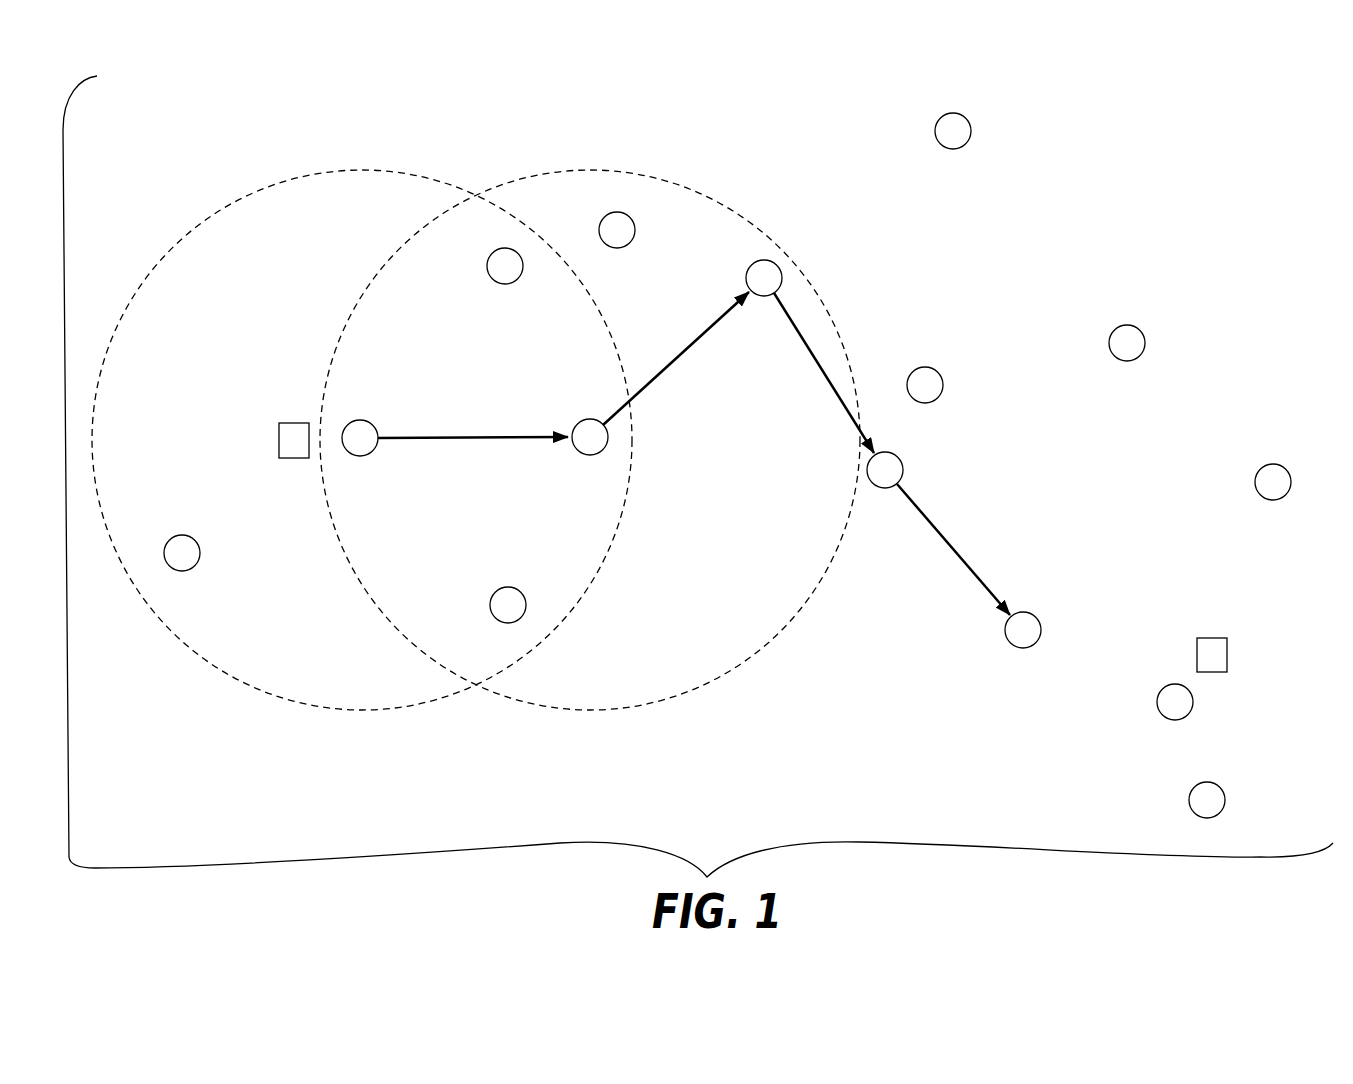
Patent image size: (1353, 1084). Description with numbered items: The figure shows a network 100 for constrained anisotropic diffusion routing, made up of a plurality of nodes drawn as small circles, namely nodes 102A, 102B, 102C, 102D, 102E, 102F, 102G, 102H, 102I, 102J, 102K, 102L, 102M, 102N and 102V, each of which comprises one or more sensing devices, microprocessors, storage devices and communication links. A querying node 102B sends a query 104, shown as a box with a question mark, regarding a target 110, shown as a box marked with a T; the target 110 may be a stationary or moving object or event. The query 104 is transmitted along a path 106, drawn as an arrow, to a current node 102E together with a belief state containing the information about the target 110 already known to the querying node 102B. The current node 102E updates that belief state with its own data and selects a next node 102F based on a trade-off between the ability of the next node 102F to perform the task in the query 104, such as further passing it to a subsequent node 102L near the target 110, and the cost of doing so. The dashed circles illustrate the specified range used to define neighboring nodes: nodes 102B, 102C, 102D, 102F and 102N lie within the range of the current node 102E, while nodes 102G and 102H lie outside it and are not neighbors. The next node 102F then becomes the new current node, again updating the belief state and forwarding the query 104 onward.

The network 100 is at (1110, 143).
The node 102A is at (198, 544).
The querying node 102B is at (372, 425).
The node 102C is at (503, 284).
The node 102D is at (503, 588).
The current node 102E is at (584, 455).
The next node 102F is at (748, 270).
The node 102G is at (902, 465).
The node 102H is at (940, 375).
The node 102I is at (1040, 622).
The node 102J is at (970, 123).
The node 102K is at (1142, 333).
The subsequent next node 102L is at (1162, 688).
The node 102M is at (1194, 786).
The node 102N is at (633, 220).
The node 102V is at (1257, 472).
The query 104 is at (296, 423).
The path 106 is at (450, 437).
The target 110 is at (1215, 638).